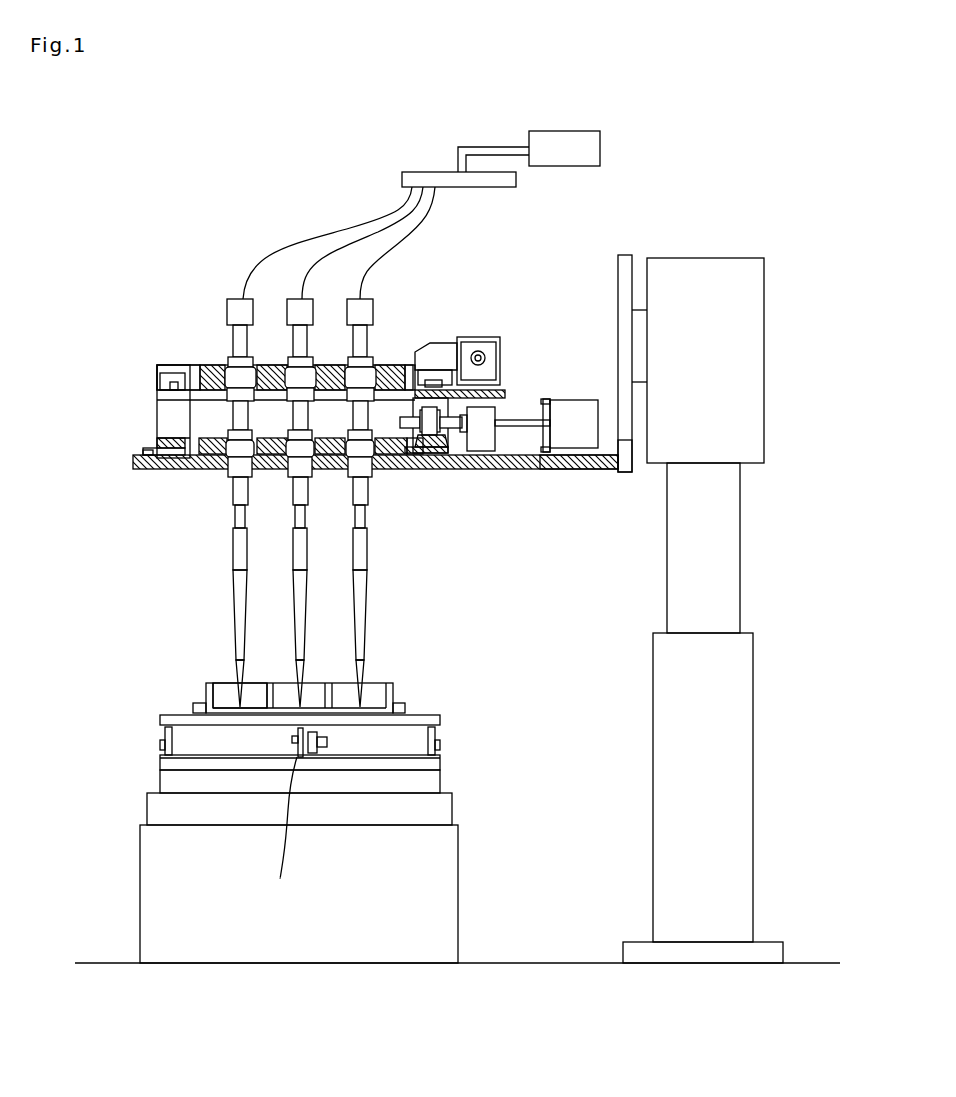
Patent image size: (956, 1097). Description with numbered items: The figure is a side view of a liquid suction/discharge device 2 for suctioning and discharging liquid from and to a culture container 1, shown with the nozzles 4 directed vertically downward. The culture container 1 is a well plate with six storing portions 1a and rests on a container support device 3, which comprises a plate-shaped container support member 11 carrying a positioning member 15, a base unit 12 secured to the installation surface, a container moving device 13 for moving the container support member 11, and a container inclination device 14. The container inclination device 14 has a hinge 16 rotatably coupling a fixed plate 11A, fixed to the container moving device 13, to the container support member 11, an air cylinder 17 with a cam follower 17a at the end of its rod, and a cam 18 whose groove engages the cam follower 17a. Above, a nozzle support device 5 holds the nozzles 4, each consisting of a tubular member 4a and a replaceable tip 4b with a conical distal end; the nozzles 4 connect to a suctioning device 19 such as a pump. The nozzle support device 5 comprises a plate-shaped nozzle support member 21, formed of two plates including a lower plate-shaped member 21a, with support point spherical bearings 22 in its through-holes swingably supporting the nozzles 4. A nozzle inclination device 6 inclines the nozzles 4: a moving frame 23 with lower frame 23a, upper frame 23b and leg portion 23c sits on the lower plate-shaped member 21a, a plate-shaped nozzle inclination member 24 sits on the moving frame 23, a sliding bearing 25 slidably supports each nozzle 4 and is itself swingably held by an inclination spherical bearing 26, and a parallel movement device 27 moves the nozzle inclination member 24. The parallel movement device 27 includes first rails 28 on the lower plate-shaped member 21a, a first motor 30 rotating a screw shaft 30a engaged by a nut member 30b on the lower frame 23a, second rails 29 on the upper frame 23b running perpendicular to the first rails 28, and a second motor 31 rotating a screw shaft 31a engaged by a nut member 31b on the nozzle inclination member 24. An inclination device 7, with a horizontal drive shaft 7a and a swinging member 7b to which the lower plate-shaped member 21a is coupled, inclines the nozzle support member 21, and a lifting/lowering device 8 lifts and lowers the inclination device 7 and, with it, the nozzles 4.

The culture container 1 is at (396, 684).
The storing portions 1a is at (225, 690).
The liquid suction/discharge device 2 is at (645, 176).
The container support device 3 is at (466, 788).
The nozzles 4 is at (279, 592).
The tubular member 4a is at (241, 490).
The tip 4b is at (382, 570).
The nozzle support device 5 is at (504, 486).
The nozzle inclination device 6 is at (400, 355).
The inclination device 7 is at (749, 327).
The drive shaft 7a is at (641, 323).
The swinging member 7b is at (629, 472).
The lifting/lowering device 8 is at (740, 733).
The container support member 11 is at (448, 716).
The fixed plate 11A is at (160, 762).
The base unit 12 is at (452, 884).
The container moving device 13 is at (150, 802).
The container inclination device 14 is at (150, 745).
The positioning member 15 is at (198, 704).
The hinge 16 is at (440, 748).
The air cylinder 17 is at (322, 742).
The cam follower 17a is at (292, 740).
The cam 18 is at (266, 817).
The suctioning device 19 is at (566, 150).
The nozzle support member 21 is at (135, 468).
The lower plate-shaped member 21a is at (568, 470).
The support point spherical bearings 22 is at (240, 452).
The moving frame 23 is at (140, 422).
The lower frame 23a is at (155, 440).
The upper frame 23b is at (506, 393).
The leg portion 23c is at (157, 400).
The nozzle inclination member 24 is at (208, 365).
The sliding bearing 25 is at (232, 360).
The inclination spherical bearing 26 is at (298, 380).
The parallel movement device 27 is at (552, 300).
The first rails 28 is at (156, 458).
The second rails 29 is at (170, 383).
The first motor 30 is at (572, 406).
The screw shaft 30a is at (478, 452).
The nut member 30b is at (432, 440).
The second motor 31 is at (487, 337).
The screw shaft 31a is at (486, 358).
The nut member 31b is at (446, 345).